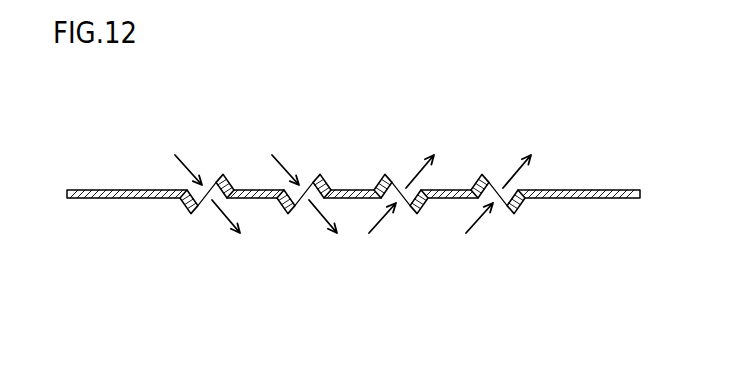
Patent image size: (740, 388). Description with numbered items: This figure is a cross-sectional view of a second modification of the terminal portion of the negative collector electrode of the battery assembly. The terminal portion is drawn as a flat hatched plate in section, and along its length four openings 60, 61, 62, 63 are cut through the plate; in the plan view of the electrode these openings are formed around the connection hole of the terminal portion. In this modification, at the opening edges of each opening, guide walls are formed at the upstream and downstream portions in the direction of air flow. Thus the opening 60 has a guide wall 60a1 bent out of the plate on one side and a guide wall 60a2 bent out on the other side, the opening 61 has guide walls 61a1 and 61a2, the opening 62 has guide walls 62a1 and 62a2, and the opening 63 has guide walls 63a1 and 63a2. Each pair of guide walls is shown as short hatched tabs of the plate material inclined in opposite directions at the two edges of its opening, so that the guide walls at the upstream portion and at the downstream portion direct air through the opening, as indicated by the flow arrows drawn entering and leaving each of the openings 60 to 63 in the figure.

The opening 60 is at (208, 182).
The guide wall 60a1 is at (187, 211).
The guide wall 60a2 is at (227, 171).
The opening 61 is at (305, 182).
The guide wall 61a1 is at (283, 211).
The guide wall 61a2 is at (326, 172).
The opening 62 is at (401, 172).
The guide wall 62a1 is at (379, 181).
The guide wall 62a2 is at (426, 209).
The opening 63 is at (498, 185).
The guide wall 63a1 is at (478, 181).
The guide wall 63a2 is at (519, 210).